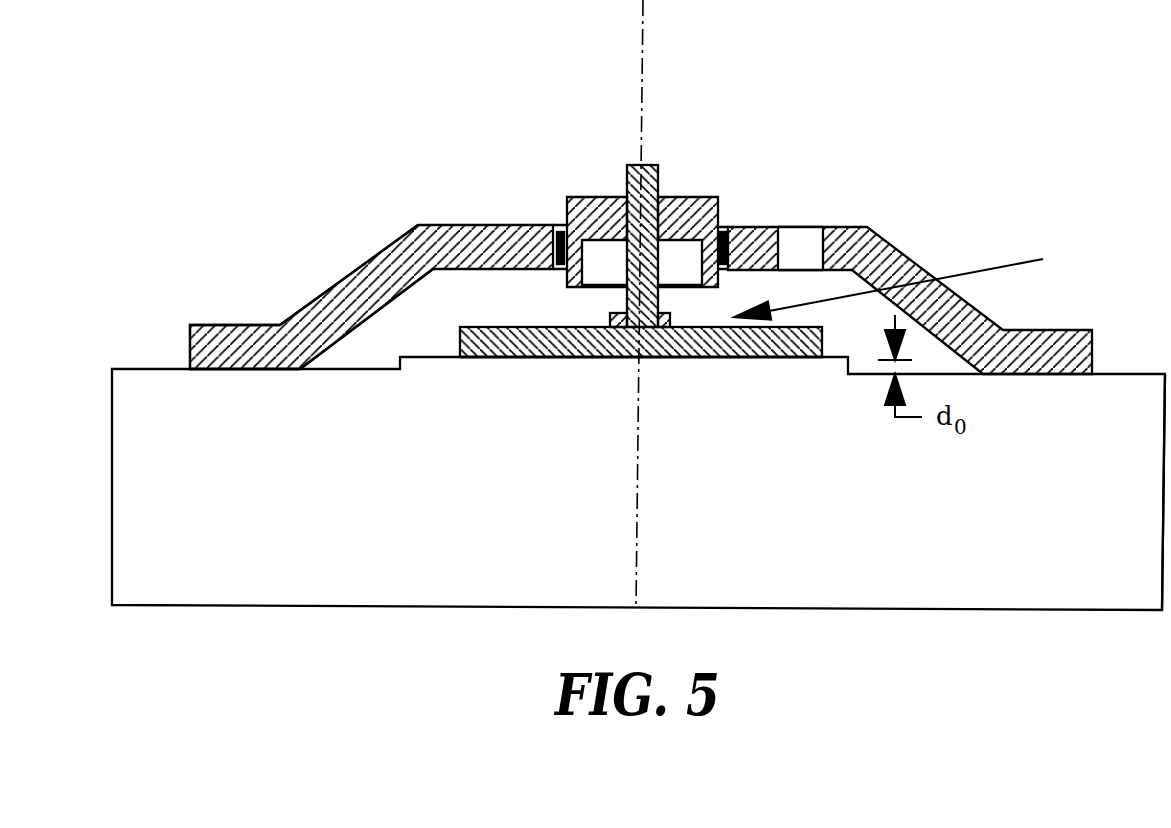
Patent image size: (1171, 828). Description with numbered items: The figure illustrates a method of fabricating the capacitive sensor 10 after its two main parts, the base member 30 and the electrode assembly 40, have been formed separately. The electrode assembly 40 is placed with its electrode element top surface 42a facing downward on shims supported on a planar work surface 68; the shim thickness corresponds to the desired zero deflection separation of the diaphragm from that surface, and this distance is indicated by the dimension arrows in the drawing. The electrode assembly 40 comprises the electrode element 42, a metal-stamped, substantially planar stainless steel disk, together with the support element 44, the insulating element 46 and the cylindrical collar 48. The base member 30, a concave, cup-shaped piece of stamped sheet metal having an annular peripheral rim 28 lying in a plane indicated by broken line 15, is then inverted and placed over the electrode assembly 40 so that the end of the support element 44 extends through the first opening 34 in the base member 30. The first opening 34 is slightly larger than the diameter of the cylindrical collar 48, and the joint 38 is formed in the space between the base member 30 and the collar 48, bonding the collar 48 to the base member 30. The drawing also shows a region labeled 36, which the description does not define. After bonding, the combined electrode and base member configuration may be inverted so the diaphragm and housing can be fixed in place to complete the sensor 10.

The capacitive sensor 10 is at (288, 88).
The plane of the annular peripheral rim 15 is at (1145, 375).
The annular peripheral rim 28 is at (258, 348).
The base member 30 is at (365, 292).
The first opening 34 is at (727, 223).
The gap 36 is at (803, 252).
The joint 38 is at (527, 343).
The electrode assembly 40 is at (908, 282).
The electrode element 42 is at (490, 225).
The electrode element top surface 42a is at (778, 358).
The support element 44 is at (650, 167).
The insulating element 46 is at (677, 195).
The cylindrical collar 48 is at (577, 197).
The planar work surface 68 is at (313, 450).